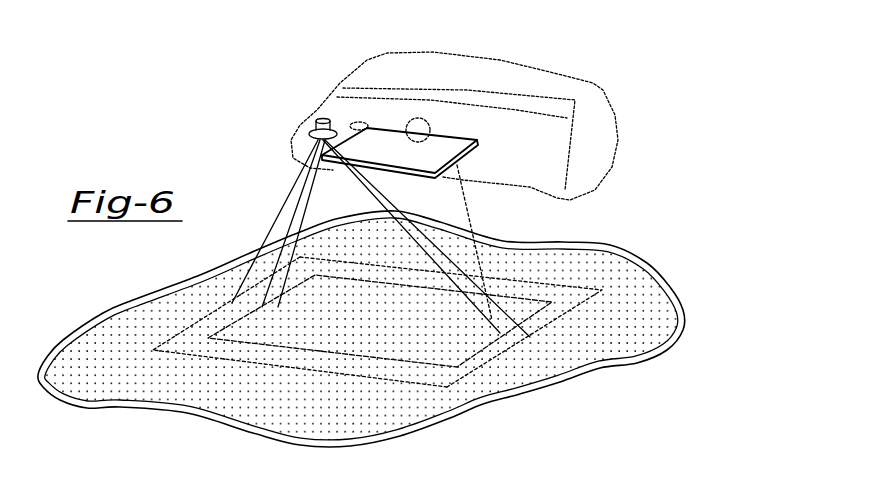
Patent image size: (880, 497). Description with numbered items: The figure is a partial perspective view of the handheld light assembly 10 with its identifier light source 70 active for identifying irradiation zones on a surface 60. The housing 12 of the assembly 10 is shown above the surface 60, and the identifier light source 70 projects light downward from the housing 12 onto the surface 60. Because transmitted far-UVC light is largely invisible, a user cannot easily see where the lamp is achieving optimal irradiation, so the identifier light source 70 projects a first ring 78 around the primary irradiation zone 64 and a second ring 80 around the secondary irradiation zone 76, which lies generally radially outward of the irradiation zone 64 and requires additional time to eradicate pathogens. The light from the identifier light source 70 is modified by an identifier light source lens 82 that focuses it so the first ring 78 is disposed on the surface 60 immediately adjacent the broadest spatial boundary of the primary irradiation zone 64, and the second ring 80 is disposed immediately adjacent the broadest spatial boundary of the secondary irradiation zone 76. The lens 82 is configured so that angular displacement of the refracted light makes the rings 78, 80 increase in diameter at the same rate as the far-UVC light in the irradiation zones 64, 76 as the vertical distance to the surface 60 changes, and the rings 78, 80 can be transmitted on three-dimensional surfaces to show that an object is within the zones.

The handheld light assembly 10 is at (454, 100).
The housing 12 is at (583, 3).
The surface 60 is at (310, 400).
The irradiation zone 64 is at (233, 333).
The identifier light source 70 is at (318, 121).
The secondary irradiation zone 76 is at (167, 345).
The first ring 78 is at (363, 280).
The second ring 80 is at (527, 282).
The identifier light source lens 82 is at (312, 142).